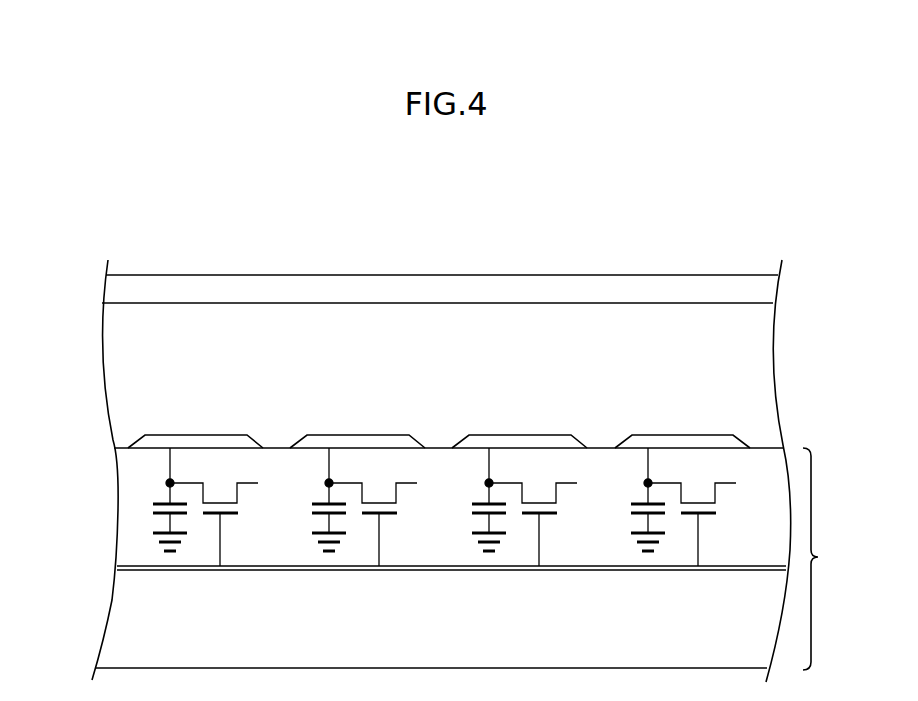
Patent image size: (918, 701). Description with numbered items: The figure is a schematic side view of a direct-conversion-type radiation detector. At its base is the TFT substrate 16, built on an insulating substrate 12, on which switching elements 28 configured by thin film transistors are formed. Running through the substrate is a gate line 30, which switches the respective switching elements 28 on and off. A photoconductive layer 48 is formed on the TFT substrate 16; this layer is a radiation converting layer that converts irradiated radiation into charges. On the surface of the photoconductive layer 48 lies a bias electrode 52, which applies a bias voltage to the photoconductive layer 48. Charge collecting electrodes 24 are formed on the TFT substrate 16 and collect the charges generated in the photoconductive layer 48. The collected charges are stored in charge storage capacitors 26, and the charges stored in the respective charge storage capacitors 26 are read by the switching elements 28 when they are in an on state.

The insulating substrate 12 is at (115, 610).
The TFT substrate 16 is at (828, 559).
The charge collecting electrodes 24 is at (206, 442).
The charge storage capacitors 26 is at (145, 521).
The switching elements 28 is at (257, 499).
The gate lines 30 is at (768, 565).
The photoconductive layer 48 is at (118, 380).
The bias electrode 52 is at (110, 290).